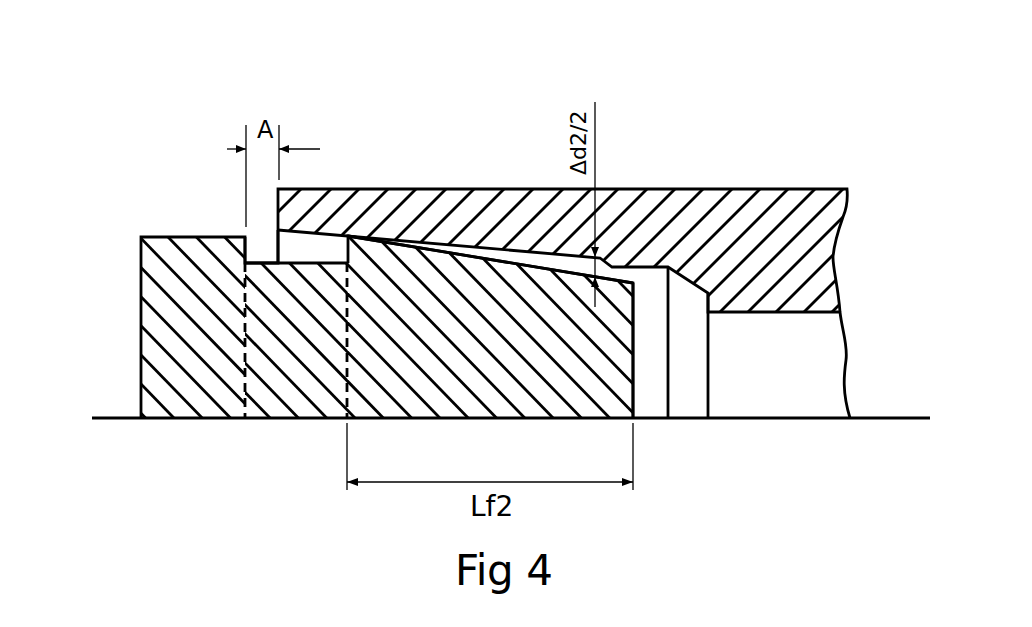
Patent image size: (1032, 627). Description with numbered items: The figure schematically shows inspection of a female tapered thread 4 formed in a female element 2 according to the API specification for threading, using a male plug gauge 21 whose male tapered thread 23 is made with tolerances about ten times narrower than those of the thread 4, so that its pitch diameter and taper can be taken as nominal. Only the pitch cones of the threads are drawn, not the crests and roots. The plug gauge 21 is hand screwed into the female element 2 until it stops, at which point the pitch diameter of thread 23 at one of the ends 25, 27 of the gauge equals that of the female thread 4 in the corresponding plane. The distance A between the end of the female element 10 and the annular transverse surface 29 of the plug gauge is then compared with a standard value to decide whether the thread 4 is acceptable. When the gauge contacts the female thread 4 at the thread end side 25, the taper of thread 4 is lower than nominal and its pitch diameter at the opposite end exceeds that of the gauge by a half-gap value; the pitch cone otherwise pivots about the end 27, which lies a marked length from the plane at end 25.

The female element 2 is at (674, 156).
The female tapered thread 4 is at (480, 246).
The end of the female element 10 is at (278, 197).
The male plug gauge 21 is at (243, 390).
The male tapered thread 23 is at (537, 270).
The thread end side of the plug gauge 25 is at (347, 250).
The end of the thread of the plug gauge 27 is at (633, 363).
The annular transverse surface of the plug gauge 29 is at (245, 248).